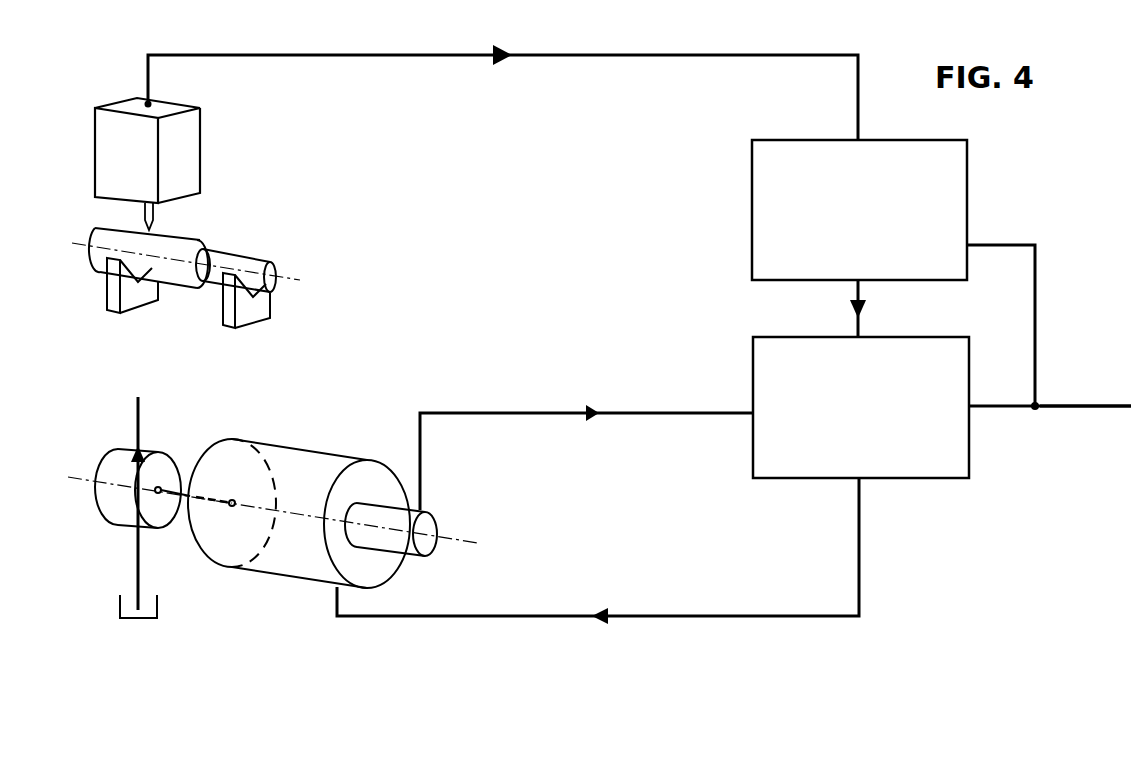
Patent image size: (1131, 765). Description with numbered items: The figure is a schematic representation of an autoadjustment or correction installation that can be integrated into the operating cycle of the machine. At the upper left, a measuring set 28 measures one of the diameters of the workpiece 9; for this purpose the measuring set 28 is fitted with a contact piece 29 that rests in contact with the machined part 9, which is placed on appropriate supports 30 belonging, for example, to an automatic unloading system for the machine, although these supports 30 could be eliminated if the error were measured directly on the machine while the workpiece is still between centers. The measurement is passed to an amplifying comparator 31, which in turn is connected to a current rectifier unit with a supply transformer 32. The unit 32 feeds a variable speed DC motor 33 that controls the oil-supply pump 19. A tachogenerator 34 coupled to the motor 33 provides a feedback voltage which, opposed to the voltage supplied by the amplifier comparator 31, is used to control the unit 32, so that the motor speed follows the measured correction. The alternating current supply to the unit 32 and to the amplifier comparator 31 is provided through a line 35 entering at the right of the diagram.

The measuring set 28 is at (187, 138).
The contact piece 29 is at (145, 214).
The workpiece 9 is at (173, 242).
The supports 30 is at (143, 297).
The oil-supply pump 19 is at (118, 470).
The variable speed DC motor 33 is at (310, 468).
The tachogenerator 34 is at (432, 528).
The amplifying comparator 31 is at (868, 222).
The current rectifier unit with supply transformer 32 is at (860, 427).
The line 35 is at (1078, 402).